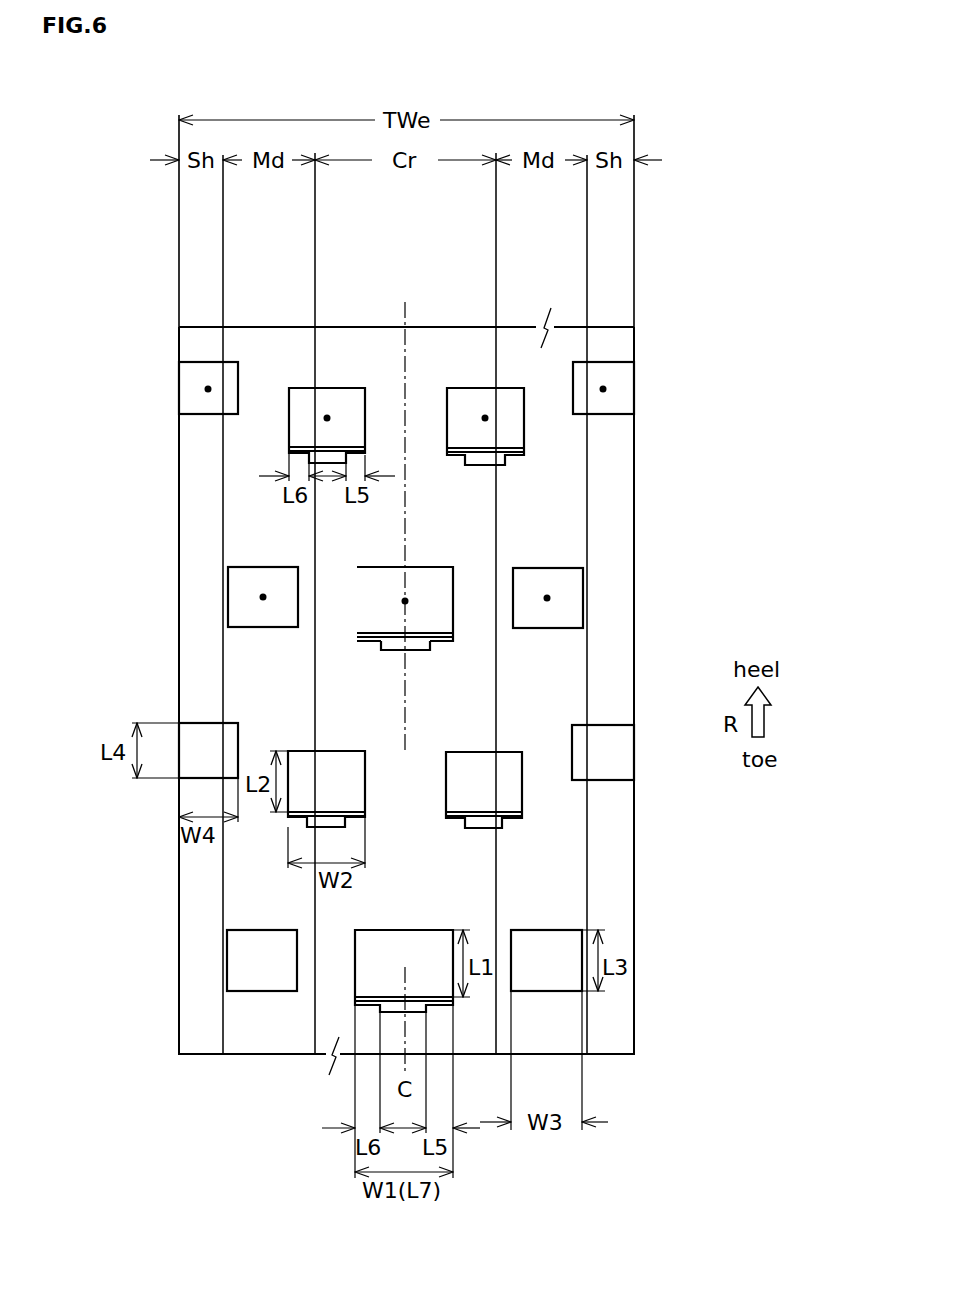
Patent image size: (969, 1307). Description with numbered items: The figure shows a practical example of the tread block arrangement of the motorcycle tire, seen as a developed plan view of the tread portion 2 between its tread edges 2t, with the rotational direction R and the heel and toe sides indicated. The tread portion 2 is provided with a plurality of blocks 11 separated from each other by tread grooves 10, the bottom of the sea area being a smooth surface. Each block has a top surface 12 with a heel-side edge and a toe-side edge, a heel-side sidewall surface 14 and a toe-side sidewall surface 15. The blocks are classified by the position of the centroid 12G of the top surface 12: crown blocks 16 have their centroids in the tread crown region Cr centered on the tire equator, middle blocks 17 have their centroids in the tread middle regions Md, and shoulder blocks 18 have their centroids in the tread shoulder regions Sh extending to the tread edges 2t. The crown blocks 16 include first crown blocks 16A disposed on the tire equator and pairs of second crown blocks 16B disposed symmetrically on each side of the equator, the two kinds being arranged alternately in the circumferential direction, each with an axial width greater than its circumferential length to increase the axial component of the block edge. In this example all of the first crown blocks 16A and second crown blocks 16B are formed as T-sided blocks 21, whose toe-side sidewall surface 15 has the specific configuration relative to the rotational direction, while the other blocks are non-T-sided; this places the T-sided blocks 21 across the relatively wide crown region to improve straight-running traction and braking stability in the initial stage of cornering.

The tread portion 2 is at (652, 268).
The tread edge 2t is at (179, 410).
The tread groove 10 is at (608, 838).
The block 11 is at (483, 250).
The top surface 12 is at (548, 617).
The centroid of top surface 12G is at (208, 389).
The heel-side sidewall surface 14 is at (427, 565).
The toe-side sidewall surface 15 is at (418, 643).
The crown block 16 is at (412, 628).
The first crown block 16A is at (385, 590).
The second crown block 16B is at (350, 412).
The middle block 17 is at (263, 950).
The shoulder block 18 is at (210, 748).
The T-sided block 21 is at (328, 790).